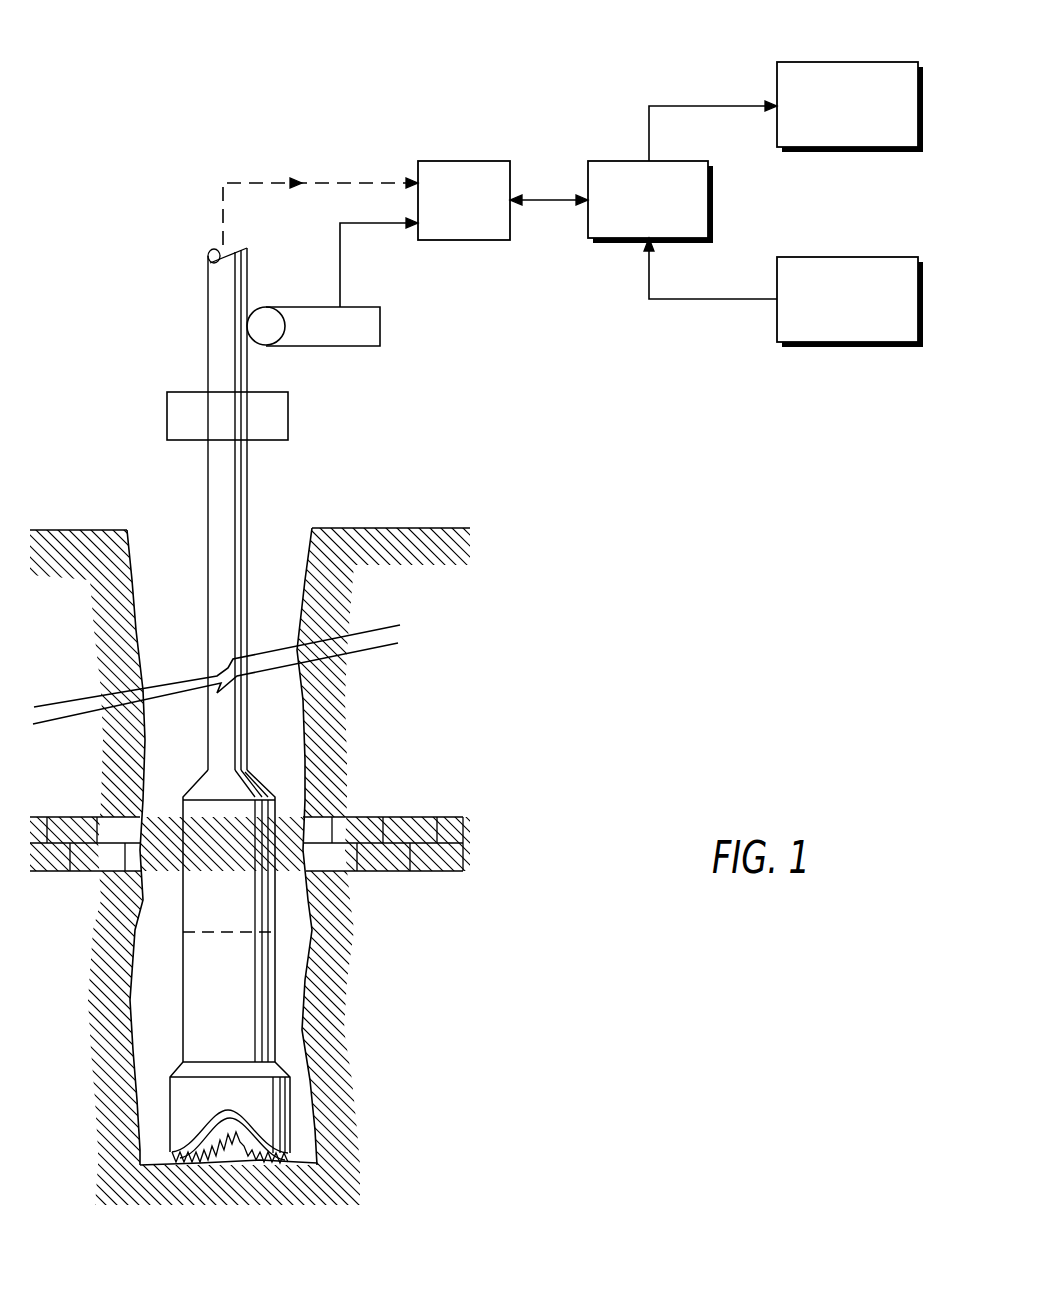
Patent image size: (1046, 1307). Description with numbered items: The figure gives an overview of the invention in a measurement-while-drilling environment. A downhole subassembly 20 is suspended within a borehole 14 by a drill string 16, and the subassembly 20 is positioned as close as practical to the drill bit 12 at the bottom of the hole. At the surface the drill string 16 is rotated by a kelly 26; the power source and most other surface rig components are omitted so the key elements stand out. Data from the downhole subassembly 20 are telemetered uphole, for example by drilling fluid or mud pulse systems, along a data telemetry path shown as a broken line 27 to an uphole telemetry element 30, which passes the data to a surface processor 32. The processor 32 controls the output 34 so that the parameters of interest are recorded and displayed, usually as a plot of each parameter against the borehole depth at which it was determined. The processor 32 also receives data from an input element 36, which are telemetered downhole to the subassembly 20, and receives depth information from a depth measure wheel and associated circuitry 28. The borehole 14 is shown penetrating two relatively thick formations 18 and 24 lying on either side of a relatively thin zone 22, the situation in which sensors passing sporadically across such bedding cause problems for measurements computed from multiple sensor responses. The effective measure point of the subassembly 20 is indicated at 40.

The drill bit 12 is at (187, 1102).
The borehole 14 is at (297, 737).
The drill string 16 is at (217, 513).
The formation 18 is at (386, 690).
The downhole subassembly 20 is at (214, 869).
The thin zone 22 is at (386, 859).
The formation 24 is at (386, 1078).
The kelly 26 is at (187, 407).
The data telemetry path 27 is at (258, 180).
The depth measure wheel and associated circuitry 28 is at (380, 330).
The uphole telemetry element 30 is at (443, 161).
The surface processor 32 is at (610, 160).
The output 34 is at (810, 62).
The input element 36 is at (807, 257).
The effective measure point 40 is at (220, 932).